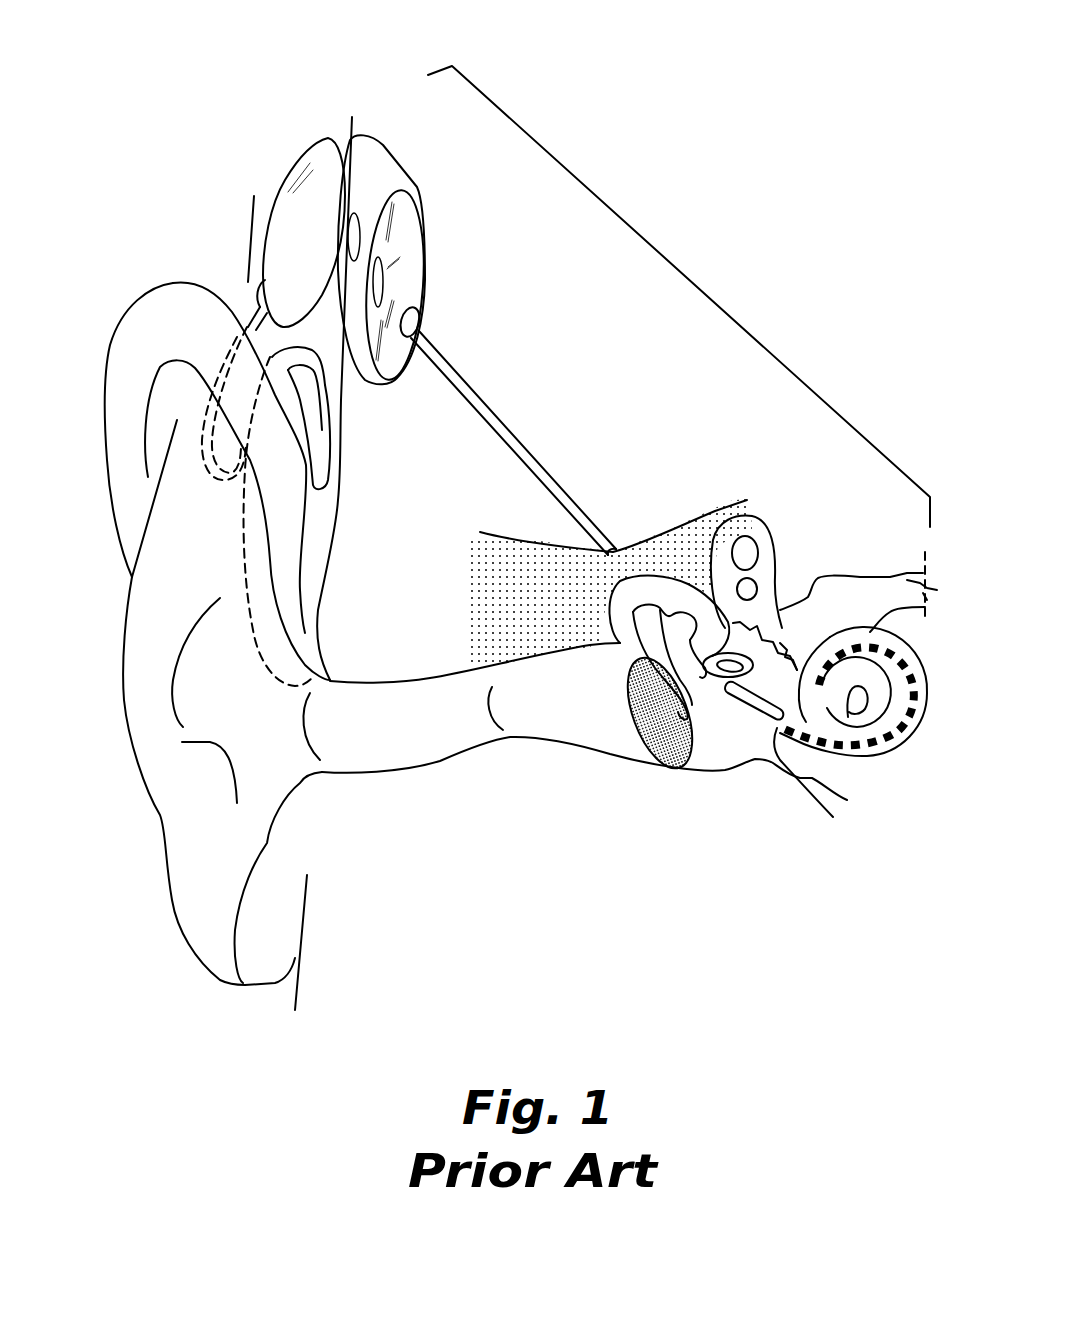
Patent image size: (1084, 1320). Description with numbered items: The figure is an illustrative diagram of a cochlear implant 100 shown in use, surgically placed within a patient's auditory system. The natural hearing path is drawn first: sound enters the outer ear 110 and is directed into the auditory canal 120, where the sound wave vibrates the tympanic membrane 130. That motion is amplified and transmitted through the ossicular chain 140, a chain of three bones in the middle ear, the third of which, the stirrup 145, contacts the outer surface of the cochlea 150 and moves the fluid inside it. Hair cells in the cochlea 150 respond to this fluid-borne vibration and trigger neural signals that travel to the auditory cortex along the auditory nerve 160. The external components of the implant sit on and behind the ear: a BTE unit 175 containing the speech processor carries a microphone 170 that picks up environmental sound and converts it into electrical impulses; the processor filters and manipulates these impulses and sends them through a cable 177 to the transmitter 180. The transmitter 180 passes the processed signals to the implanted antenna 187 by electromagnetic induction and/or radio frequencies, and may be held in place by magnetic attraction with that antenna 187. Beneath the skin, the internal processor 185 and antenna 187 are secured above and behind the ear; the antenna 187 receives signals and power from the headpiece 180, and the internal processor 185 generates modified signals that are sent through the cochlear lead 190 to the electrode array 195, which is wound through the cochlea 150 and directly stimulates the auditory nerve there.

The cochlear implant 100 is at (658, 248).
The outer ear 110 is at (195, 847).
The auditory canal 120 is at (457, 757).
The tympanic membrane 130 is at (673, 762).
The ossicular chain 140 is at (663, 590).
The stirrup 145 is at (717, 680).
The cochlea 150 is at (905, 712).
The auditory nerve 160 is at (857, 573).
The microphone 170 is at (327, 463).
The BTE unit 175 is at (318, 363).
The cable 177 is at (235, 346).
The transmitter 180 is at (283, 193).
The internal processor 185 is at (407, 254).
The antenna 187 is at (362, 157).
The cochlear lead 190 is at (521, 435).
The electrode array 195 is at (843, 752).